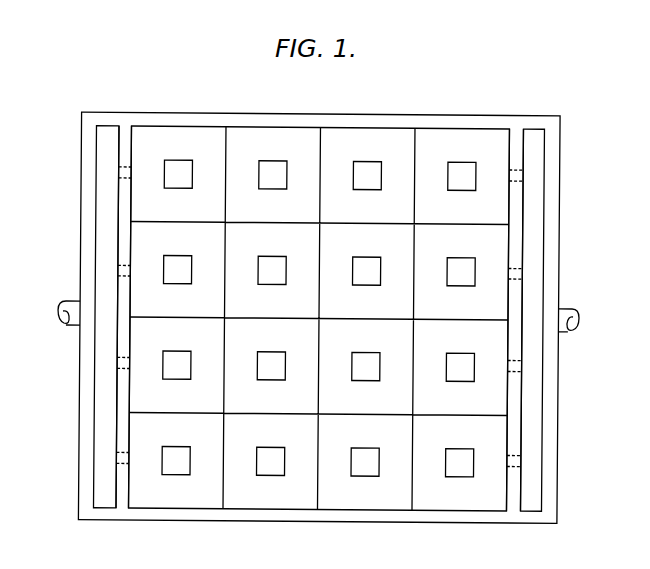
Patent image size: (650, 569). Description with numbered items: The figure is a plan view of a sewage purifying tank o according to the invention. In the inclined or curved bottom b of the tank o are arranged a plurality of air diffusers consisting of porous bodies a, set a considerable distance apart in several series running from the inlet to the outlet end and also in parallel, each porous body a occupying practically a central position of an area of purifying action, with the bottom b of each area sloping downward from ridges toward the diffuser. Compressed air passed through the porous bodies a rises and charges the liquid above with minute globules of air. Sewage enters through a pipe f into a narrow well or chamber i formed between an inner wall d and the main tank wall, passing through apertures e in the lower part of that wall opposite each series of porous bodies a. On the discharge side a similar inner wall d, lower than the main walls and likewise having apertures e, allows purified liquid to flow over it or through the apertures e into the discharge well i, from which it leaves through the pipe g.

The porous bodies a is at (388, 275).
The bottom b is at (322, 525).
The inner wall d is at (572, 388).
The apertures e is at (565, 460).
The pipe f is at (70, 327).
The pipe g is at (568, 330).
The well i is at (567, 437).
The tank o is at (319, 319).